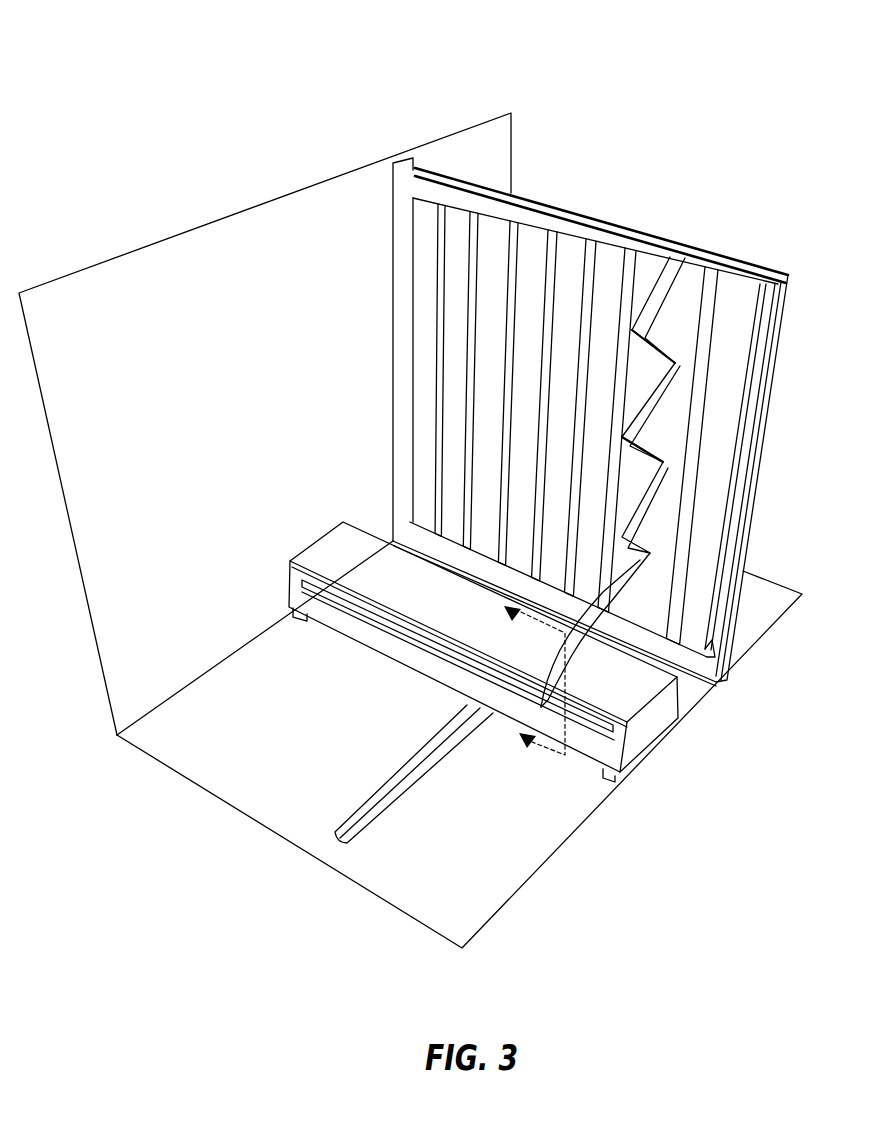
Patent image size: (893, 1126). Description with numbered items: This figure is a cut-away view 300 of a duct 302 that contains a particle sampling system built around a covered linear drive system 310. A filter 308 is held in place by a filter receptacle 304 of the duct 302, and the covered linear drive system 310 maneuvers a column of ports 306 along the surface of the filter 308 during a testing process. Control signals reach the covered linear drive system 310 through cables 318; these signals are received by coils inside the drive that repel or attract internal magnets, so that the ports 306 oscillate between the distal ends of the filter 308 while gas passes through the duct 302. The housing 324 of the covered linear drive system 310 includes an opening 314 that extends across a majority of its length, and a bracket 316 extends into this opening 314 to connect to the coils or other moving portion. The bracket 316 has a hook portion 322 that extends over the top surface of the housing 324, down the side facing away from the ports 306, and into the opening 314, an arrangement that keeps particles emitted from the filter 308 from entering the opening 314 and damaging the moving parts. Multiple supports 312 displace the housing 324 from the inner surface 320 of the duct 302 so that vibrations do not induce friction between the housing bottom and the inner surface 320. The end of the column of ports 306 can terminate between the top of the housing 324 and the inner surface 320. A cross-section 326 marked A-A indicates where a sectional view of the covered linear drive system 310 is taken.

The cut-away view 300 is at (150, 78).
The duct 302 is at (327, 180).
The filter receptacle 304 is at (596, 222).
The column of ports 306 is at (652, 290).
The filter 308 is at (437, 356).
The covered linear drive system 310 is at (308, 542).
The supports 312 is at (290, 620).
The opening 314 is at (407, 640).
The bracket 316 is at (592, 653).
The cables 318 is at (418, 756).
The inner surface 320 is at (475, 857).
The hook portion 322 is at (549, 712).
The housing 324 is at (413, 586).
The cross-section 326 is at (558, 633).